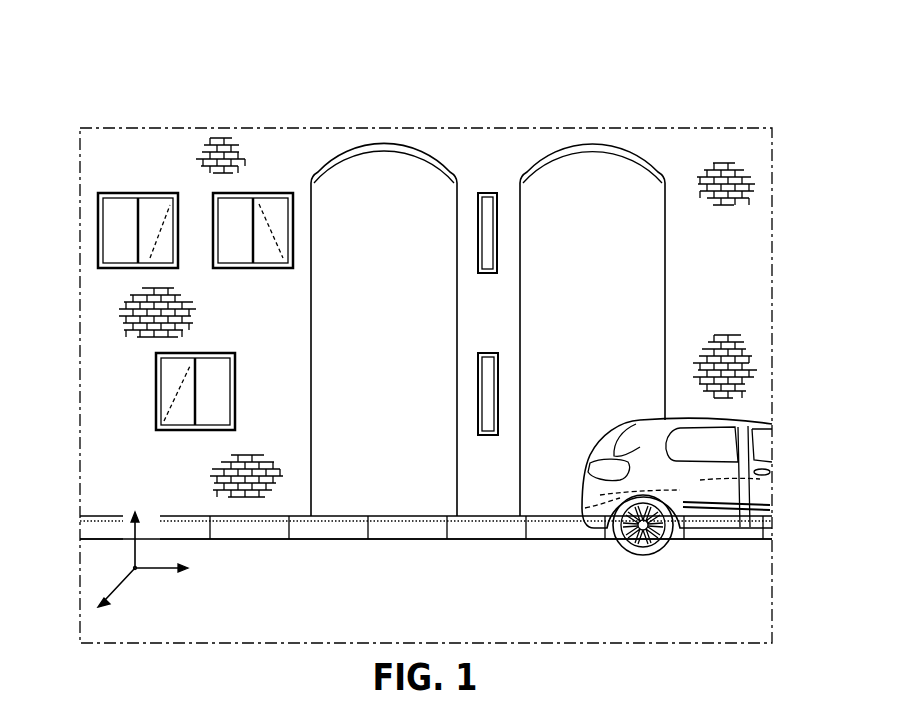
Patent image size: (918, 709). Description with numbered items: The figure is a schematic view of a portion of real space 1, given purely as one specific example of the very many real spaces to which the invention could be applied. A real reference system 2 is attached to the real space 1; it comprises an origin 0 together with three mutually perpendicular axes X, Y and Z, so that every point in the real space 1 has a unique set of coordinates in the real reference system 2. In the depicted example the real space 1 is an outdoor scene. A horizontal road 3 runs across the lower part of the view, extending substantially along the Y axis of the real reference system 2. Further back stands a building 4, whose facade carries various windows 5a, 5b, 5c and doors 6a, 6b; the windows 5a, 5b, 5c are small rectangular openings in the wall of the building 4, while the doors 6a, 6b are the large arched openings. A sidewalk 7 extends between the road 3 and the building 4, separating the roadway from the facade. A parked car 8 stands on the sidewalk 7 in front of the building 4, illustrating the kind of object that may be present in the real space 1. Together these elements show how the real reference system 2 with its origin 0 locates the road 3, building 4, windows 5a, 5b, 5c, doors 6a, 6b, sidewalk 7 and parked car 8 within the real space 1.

The real space 1 is at (748, 156).
The origin 0 is at (133, 568).
The real reference system 2 is at (117, 585).
The road 3 is at (746, 624).
The building 4 is at (710, 142).
The window 5a is at (120, 192).
The window 5b is at (275, 192).
The window 5c is at (155, 403).
The door 6a is at (437, 163).
The door 6b is at (640, 160).
The sidewalk 7 is at (100, 532).
The parked car 8 is at (760, 452).